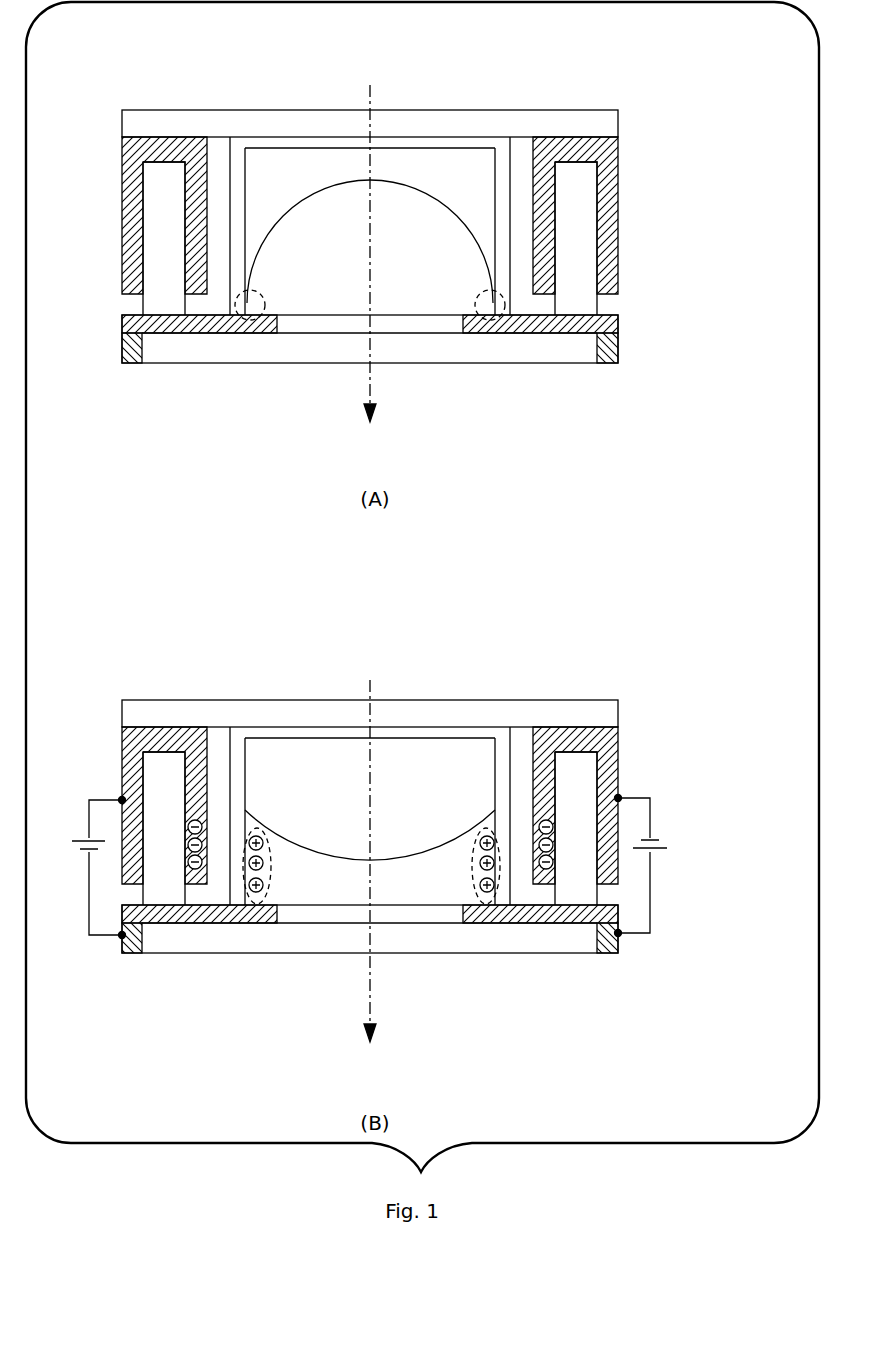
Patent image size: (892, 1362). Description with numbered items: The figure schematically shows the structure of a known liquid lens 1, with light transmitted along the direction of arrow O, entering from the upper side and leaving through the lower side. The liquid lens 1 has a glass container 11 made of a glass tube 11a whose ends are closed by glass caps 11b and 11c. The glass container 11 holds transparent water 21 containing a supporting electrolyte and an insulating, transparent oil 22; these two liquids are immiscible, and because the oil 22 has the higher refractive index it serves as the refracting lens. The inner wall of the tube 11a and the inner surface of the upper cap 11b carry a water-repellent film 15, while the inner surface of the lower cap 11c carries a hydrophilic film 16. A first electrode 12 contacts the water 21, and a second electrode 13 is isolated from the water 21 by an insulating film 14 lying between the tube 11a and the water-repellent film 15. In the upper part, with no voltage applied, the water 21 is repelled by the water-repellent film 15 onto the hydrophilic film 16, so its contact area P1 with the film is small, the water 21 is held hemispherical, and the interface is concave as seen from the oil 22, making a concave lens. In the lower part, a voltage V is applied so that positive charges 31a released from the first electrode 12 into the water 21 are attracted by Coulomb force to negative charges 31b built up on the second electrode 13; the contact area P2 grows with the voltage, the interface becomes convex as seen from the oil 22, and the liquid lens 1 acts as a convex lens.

The liquid lens 1 is at (583, 77).
The glass container 11 is at (695, 100).
The glass tube 11a is at (575, 237).
The glass cap 11b is at (585, 127).
The glass cap 11c is at (575, 347).
The first electrode 12 is at (137, 365).
The second electrode 13 is at (130, 177).
The insulating film 14 is at (198, 305).
The water-repellent film 15 is at (233, 270).
The hydrophilic film 16 is at (412, 322).
The water 21 is at (422, 215).
The oil 22 is at (263, 175).
The positive charges 31a is at (260, 897).
The negative charges 31b is at (193, 817).
The arrow indicating light transmission direction O is at (369, 551).
The contact area P1 is at (253, 320).
The contact area P2 is at (258, 904).
The applied voltage V is at (369, 867).